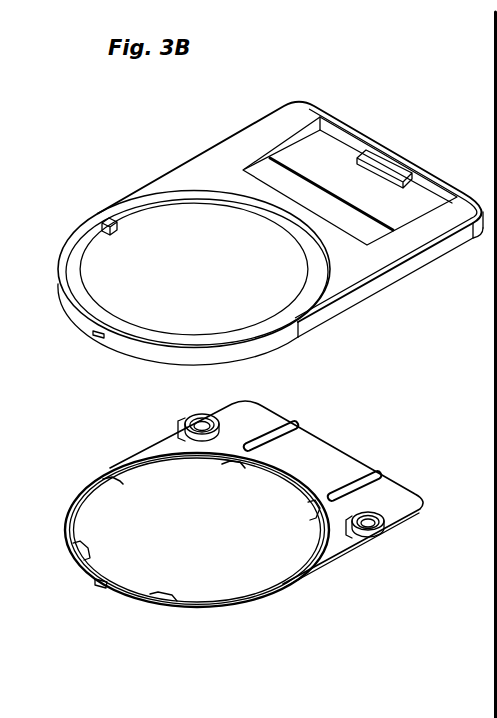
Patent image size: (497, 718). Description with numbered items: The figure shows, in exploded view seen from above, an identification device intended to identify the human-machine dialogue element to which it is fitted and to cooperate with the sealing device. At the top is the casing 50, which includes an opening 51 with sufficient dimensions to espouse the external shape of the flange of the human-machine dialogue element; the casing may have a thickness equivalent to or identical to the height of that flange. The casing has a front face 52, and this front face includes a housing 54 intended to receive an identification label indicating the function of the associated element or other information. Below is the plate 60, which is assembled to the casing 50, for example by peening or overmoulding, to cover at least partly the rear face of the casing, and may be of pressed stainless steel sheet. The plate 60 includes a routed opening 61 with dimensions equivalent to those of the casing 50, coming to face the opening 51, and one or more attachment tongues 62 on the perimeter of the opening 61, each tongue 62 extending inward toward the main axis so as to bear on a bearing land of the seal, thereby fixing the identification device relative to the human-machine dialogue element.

The casing 50 is at (270, 216).
The opening 51 is at (173, 238).
The front face 52 is at (363, 265).
The housing 54 is at (330, 157).
The plate 60 is at (335, 443).
The routed opening 61 is at (252, 572).
The attachment tongue 62 is at (110, 482).